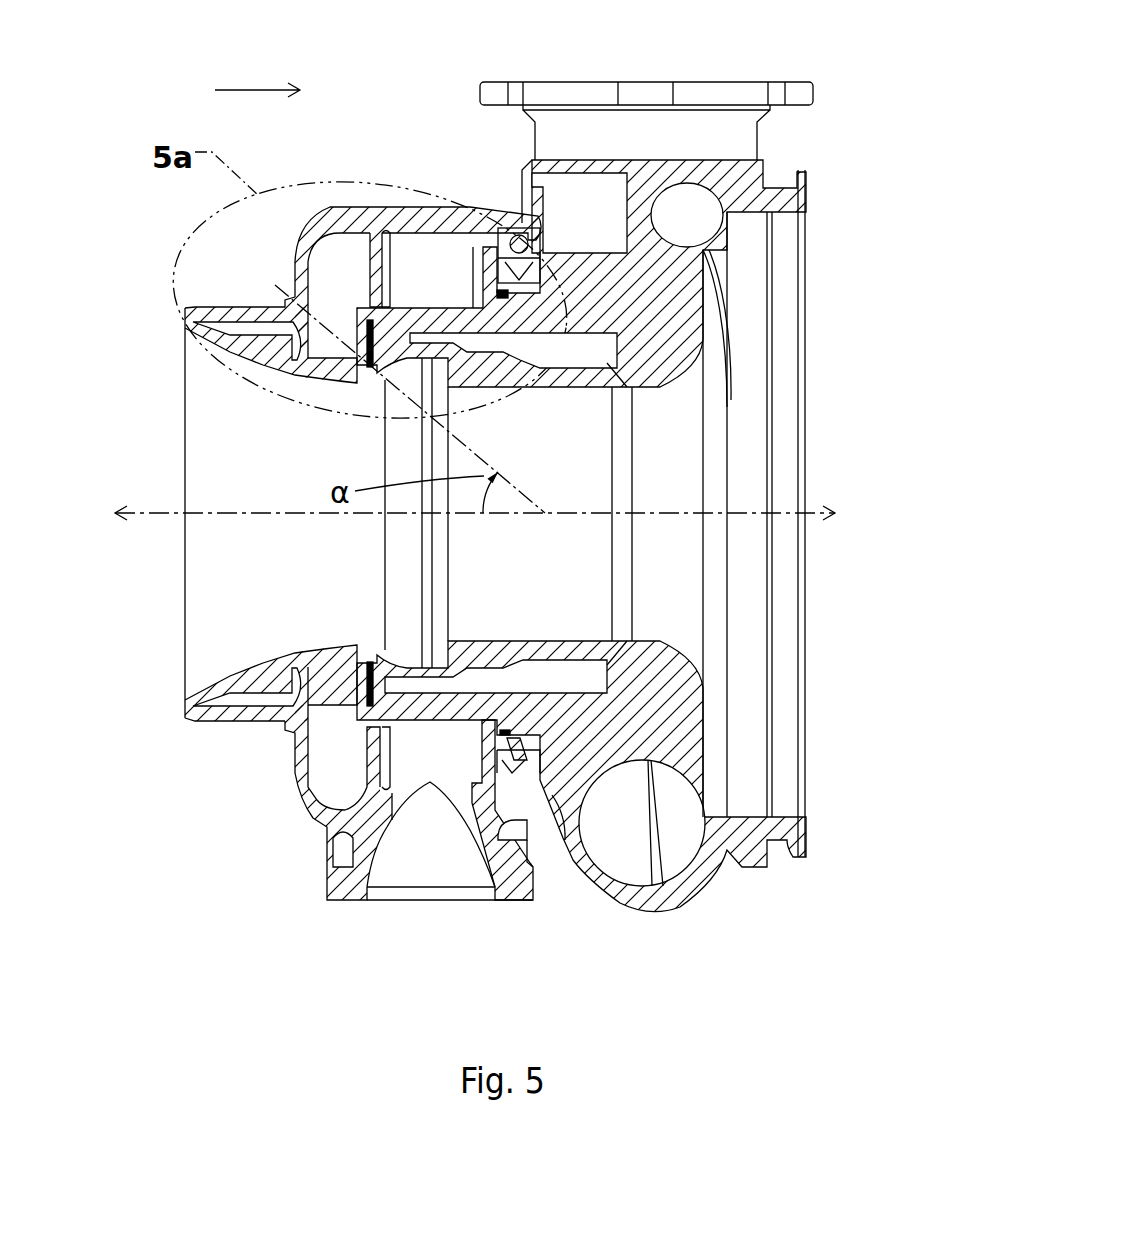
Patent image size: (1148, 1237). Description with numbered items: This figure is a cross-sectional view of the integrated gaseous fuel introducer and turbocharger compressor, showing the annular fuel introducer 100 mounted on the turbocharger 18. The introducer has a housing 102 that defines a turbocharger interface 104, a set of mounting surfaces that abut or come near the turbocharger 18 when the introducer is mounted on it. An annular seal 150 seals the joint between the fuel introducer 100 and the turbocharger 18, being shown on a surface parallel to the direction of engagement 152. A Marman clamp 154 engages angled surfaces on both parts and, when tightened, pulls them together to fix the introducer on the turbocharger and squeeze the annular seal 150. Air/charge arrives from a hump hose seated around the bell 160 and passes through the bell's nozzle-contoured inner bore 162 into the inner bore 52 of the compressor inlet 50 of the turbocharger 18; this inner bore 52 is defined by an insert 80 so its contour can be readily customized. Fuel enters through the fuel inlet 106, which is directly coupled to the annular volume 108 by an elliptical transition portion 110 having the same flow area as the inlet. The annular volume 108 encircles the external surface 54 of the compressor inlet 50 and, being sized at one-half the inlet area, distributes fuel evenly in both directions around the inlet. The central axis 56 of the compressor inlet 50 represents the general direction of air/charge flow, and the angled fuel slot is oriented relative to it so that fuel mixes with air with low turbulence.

The turbocharger 18 is at (845, 112).
The compressor inlet 50 is at (560, 405).
The inner bore 52 is at (585, 390).
The external surface 54 is at (420, 260).
The central axis 56 is at (160, 515).
The insert 80 is at (575, 642).
The annular fuel introducer 100 is at (243, 792).
The housing 102 is at (298, 262).
The turbocharger interface 104 is at (577, 278).
The fuel inlet 106 is at (403, 912).
The annular volume 108 is at (382, 260).
The transition portion 110 is at (453, 783).
The annular seal 150 is at (600, 352).
The direction of engagement 152 is at (254, 88).
The Marman clamp 154 is at (503, 218).
The bell 160 is at (203, 724).
The inner bore 162 is at (220, 678).